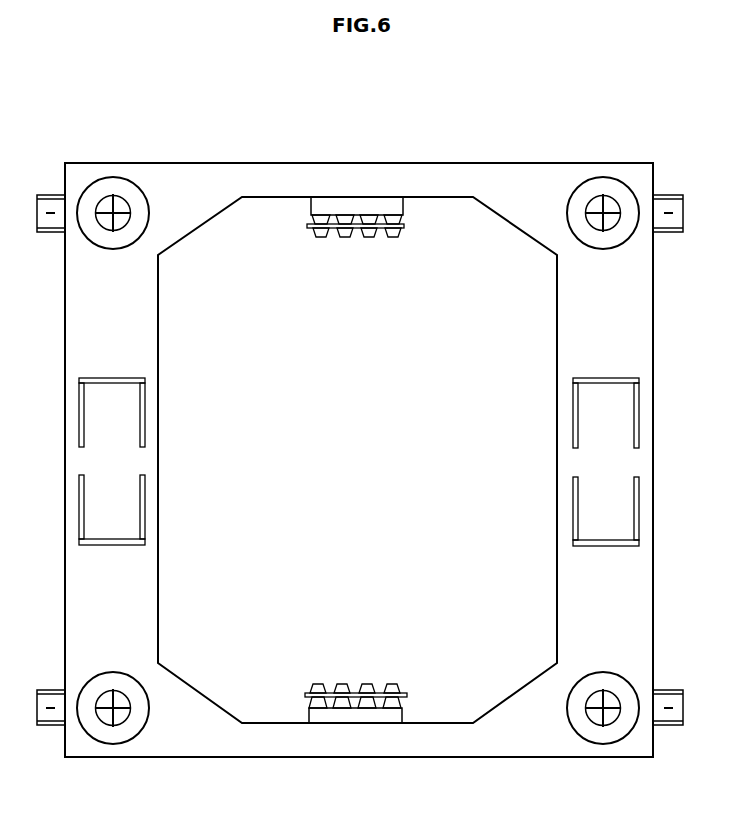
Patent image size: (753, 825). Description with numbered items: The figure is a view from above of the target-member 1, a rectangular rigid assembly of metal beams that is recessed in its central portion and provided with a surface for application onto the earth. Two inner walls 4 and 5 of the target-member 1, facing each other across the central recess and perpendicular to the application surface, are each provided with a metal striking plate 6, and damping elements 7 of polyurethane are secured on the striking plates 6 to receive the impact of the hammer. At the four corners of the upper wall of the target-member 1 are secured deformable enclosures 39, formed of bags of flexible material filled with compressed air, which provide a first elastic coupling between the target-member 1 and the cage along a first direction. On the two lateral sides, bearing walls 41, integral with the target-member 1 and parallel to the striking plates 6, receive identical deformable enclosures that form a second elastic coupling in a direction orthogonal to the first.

The target-member 1 is at (464, 112).
The inner wall 4 is at (288, 204).
The inner wall 5 is at (287, 714).
The striking plate 6 is at (403, 212).
The damping element 7 is at (395, 237).
The deformable enclosure 39 is at (112, 177).
The bearing wall 41 is at (116, 383).